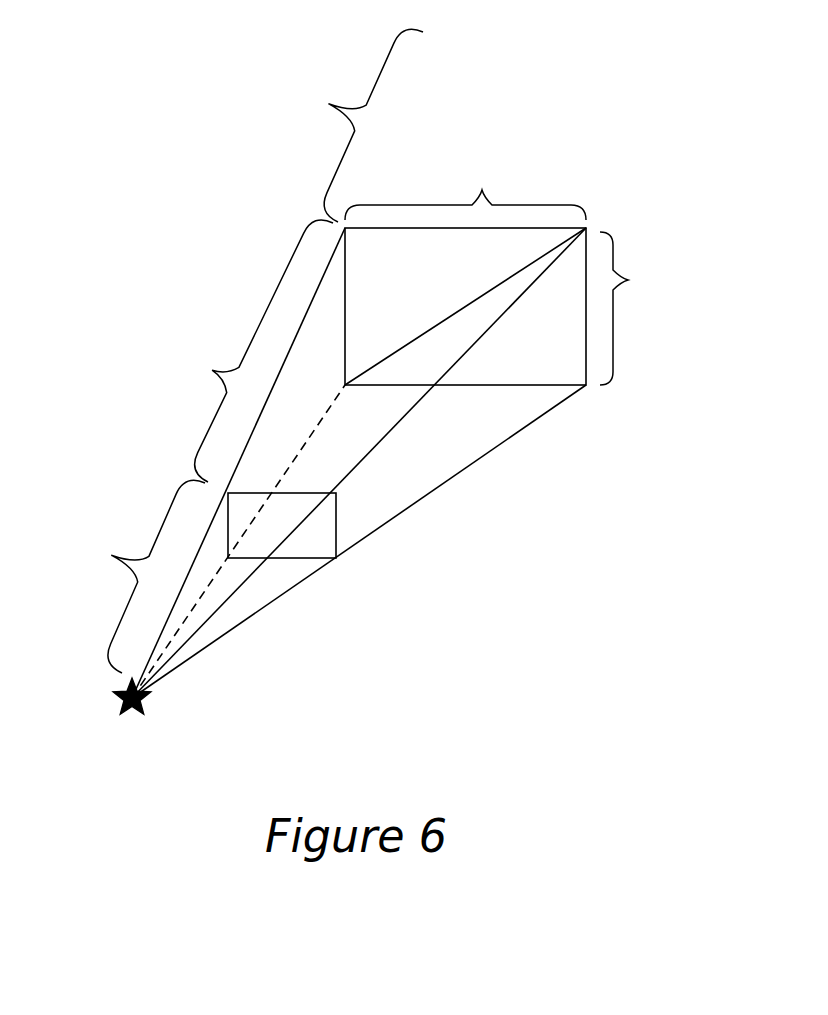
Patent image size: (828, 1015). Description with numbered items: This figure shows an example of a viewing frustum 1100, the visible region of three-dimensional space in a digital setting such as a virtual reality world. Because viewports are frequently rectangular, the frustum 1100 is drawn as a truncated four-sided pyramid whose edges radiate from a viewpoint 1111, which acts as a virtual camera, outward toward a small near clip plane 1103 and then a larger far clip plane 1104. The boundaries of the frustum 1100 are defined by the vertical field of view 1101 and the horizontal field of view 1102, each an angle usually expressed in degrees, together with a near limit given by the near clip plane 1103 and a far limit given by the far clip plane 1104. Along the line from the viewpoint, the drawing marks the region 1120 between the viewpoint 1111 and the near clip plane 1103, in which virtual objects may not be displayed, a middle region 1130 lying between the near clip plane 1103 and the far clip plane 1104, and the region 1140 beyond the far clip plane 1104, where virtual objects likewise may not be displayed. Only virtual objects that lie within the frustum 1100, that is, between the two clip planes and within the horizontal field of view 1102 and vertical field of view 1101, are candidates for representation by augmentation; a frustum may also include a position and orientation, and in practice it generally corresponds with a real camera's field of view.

The viewing frustum 1100 is at (555, 525).
The vertical field of view 1101 is at (641, 308).
The horizontal field of view 1102 is at (465, 186).
The near clip plane 1103 is at (337, 523).
The far clip plane 1104 is at (587, 386).
The viewpoint 1111 is at (148, 703).
The region between the viewpoint and the near clip plane 1120 is at (123, 576).
The middle depth range 1130 is at (232, 351).
The region beyond the far clip plane 1140 is at (347, 125).